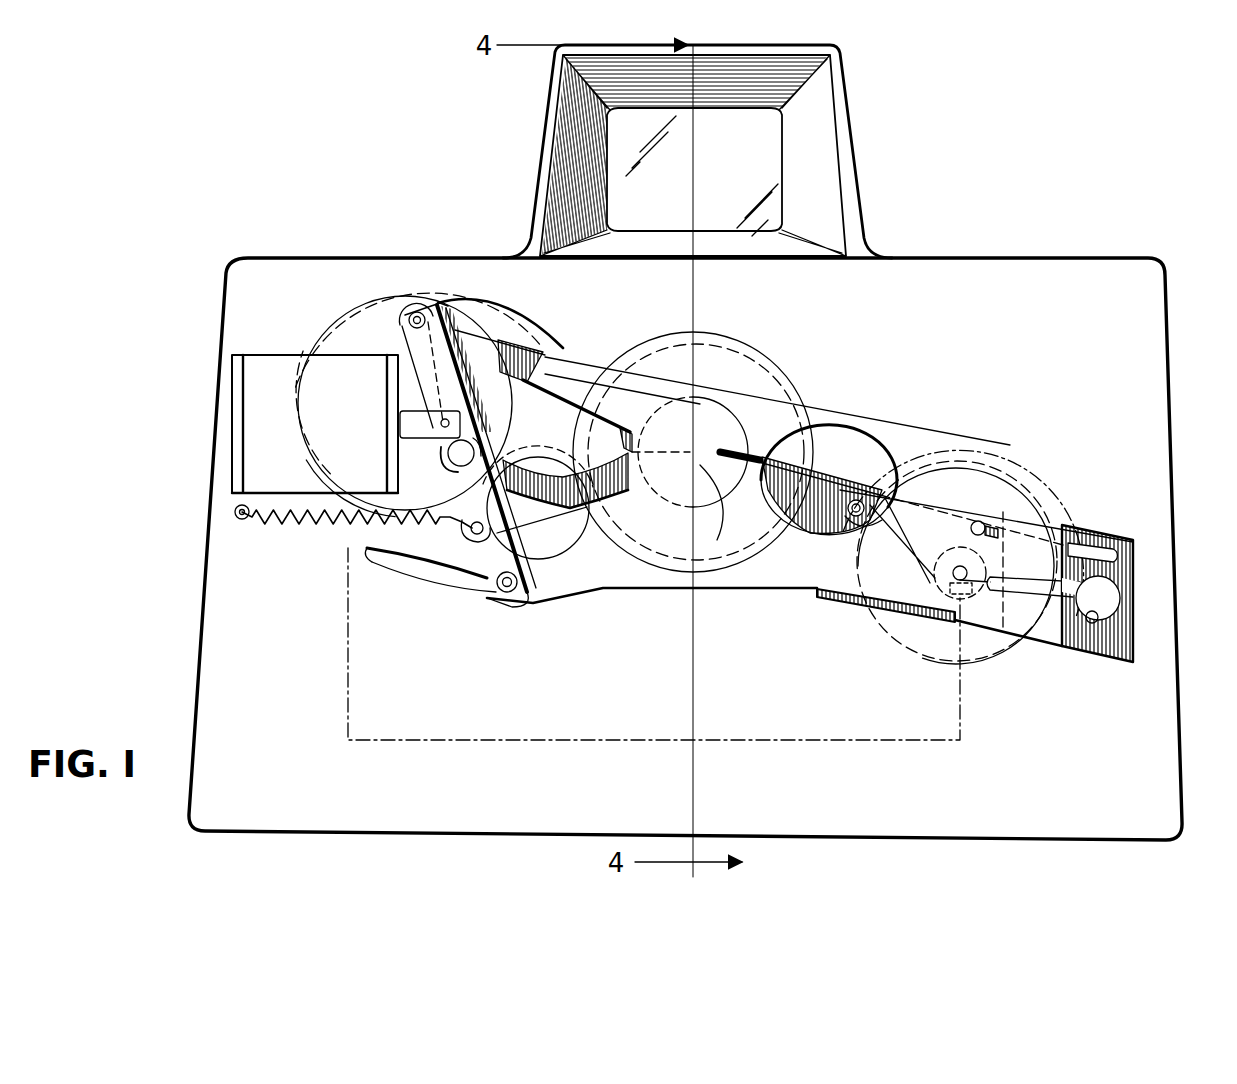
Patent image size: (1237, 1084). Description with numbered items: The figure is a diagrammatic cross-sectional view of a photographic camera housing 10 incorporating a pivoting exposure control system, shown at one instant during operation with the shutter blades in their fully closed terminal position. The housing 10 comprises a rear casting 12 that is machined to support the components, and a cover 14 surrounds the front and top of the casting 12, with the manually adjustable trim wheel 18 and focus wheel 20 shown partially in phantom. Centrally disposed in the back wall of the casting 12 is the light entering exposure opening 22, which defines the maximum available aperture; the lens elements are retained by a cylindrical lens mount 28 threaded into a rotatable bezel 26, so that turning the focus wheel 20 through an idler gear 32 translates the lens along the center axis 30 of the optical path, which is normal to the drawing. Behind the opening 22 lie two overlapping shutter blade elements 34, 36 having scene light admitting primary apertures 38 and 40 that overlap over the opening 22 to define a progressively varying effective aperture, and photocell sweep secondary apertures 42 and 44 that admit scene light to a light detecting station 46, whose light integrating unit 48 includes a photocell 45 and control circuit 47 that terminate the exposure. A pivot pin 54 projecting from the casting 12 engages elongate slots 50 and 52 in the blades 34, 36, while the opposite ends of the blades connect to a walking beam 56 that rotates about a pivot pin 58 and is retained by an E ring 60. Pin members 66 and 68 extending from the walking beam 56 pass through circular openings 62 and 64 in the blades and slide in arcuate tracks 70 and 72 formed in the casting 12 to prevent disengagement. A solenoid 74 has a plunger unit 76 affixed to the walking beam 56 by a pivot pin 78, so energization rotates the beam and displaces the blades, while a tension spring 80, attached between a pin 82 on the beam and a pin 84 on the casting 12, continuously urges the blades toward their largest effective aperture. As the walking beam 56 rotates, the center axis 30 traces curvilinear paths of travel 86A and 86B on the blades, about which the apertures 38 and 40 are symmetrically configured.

The housing 10 is at (290, 246).
The rear casting 12 is at (1170, 434).
The cover 14 is at (1020, 262).
The trim wheel 18 is at (976, 452).
The focus wheel 20 is at (385, 293).
The light entering exposure opening 22 is at (716, 410).
The bezel 26 is at (752, 345).
The lens mount 28 is at (716, 340).
The center axis 30 is at (707, 560).
The idler gear 32 is at (558, 565).
The shutter blade element 34 is at (596, 354).
The shutter blade element 36 is at (616, 592).
The primary aperture 38 is at (515, 345).
The primary aperture 40 is at (862, 444).
The photocell sweep secondary aperture 42 is at (820, 600).
The photocell sweep secondary aperture 44 is at (1085, 630).
The photocell 45 is at (930, 550).
The light detecting station 46 is at (1000, 551).
The control circuit 47 is at (955, 626).
The light integrating unit 48 is at (957, 567).
The elongate slot 50 is at (868, 505).
The elongate slot 52 is at (1112, 544).
The pivot pin 54 is at (985, 524).
The walking beam 56 is at (392, 344).
The pivot pin 58 is at (440, 452).
The E ring 60 is at (452, 464).
The circular opening 62 is at (430, 300).
The circular opening 64 is at (509, 600).
The pin member 66 is at (405, 318).
The pin member 68 is at (498, 594).
The arcuate track 70 is at (540, 322).
The arcuate track 72 is at (385, 575).
The solenoid 74 is at (230, 398).
The plunger unit 76 is at (410, 416).
The pivot pin 78 is at (443, 416).
The tension spring 80 is at (318, 530).
The pin 82 is at (472, 536).
The pin 84 is at (242, 520).
The curvilinear path of travel 86A is at (626, 424).
The curvilinear path of travel 86B is at (822, 543).